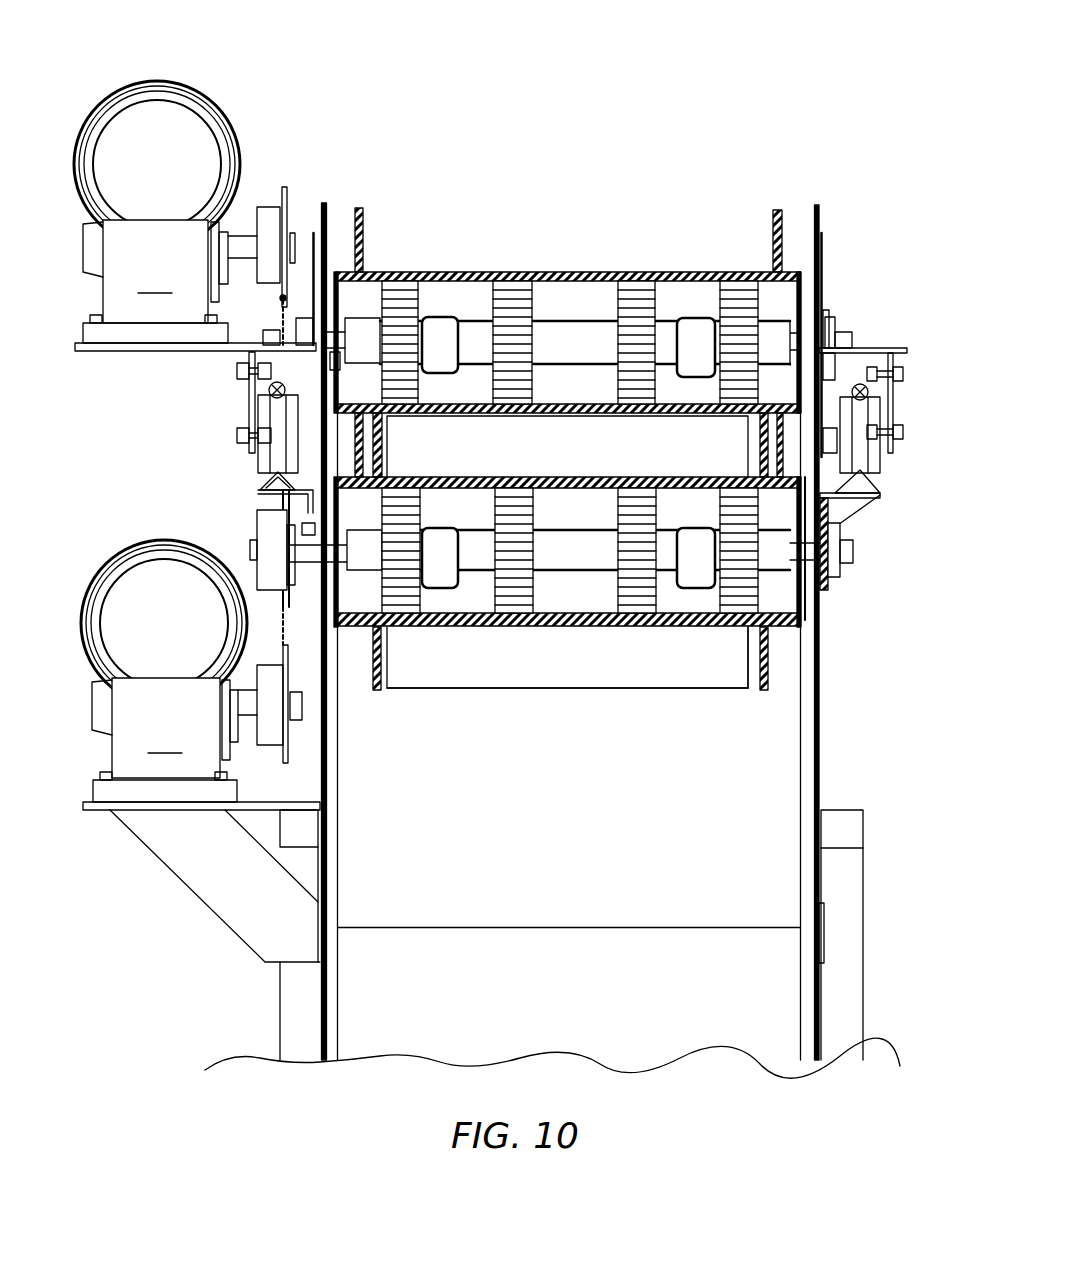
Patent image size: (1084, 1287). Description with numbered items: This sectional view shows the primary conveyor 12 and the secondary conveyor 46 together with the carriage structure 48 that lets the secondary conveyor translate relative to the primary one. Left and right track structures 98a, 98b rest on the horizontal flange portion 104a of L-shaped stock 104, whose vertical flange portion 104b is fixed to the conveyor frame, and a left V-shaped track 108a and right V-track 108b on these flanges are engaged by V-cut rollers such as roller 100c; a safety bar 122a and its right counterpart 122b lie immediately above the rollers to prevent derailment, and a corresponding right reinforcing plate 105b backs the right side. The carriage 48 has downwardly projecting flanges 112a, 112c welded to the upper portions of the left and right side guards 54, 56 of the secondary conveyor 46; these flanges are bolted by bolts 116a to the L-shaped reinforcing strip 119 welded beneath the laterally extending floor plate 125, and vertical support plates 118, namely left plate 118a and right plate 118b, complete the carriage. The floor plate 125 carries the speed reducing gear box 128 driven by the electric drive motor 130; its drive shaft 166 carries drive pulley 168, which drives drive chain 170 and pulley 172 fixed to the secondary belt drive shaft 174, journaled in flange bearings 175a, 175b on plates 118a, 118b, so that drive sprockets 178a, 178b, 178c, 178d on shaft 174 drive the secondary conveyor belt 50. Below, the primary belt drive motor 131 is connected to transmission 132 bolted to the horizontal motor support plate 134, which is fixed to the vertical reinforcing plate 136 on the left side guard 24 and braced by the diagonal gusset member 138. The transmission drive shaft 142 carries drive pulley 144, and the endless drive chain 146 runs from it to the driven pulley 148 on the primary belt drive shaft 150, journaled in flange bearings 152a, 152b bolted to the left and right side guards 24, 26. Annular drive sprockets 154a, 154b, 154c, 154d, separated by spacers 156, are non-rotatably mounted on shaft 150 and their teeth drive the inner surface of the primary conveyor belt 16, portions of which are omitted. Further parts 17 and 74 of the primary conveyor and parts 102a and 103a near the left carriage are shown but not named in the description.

The primary conveyor 12 is at (825, 740).
The primary conveyor belt 16 is at (457, 697).
The cross member 17 is at (298, 828).
The left side guard 24 is at (320, 997).
The right side guard 26 is at (822, 998).
The secondary conveyor 46 is at (876, 231).
The carriage structure 48 is at (331, 155).
The secondary conveyor belt 50 is at (588, 250).
The left side guard 54 is at (330, 205).
The right side guard 56 is at (812, 230).
The lower support plate 74 is at (686, 690).
The left track structure 98a is at (218, 493).
The right track structure 98b is at (866, 548).
The V-cut roller 100c is at (880, 472).
The upper bearing support 102a is at (388, 478).
The bearing block 103a is at (258, 546).
The lower shaft 104 is at (313, 590).
The horizontal flange portion 104a is at (290, 495).
The vertical flange portion 104b is at (660, 689).
The right shaft stub 105b is at (852, 562).
The left V-shaped track 108a is at (260, 490).
The right V-track 108b is at (878, 495).
The downwardly projecting flange 112a is at (258, 415).
The downwardly extending flange 112c is at (882, 415).
The bolts 116a is at (238, 374).
The right support plate 118 is at (812, 615).
The vertical supporting plate 118a is at (313, 245).
The right support plate 118b is at (822, 245).
The L-shaped reinforcing strip 119 is at (248, 355).
The safety bar 122a is at (268, 392).
The adjusting screw 122b is at (862, 382).
The floor plate 125 is at (108, 351).
The speed reducing gear box 128 is at (155, 271).
The electric drive motor 130 is at (160, 80).
The primary belt drive motor 131 is at (137, 545).
The speed-reducing transmission 132 is at (165, 728).
The horizontal motor support plate 134 is at (108, 810).
The vertical reinforcing plate 136 is at (328, 788).
The gusset member 138 is at (190, 890).
The drive shaft 142 is at (248, 720).
The drive pulley 144 is at (289, 745).
The endless drive chain 146 is at (268, 650).
The driven pulley 148 is at (262, 612).
The primary belt drive shaft 150 is at (347, 575).
The flange bearing 152a is at (258, 565).
The flange bearing 152b is at (838, 580).
The annular drive sprocket 154a is at (398, 600).
The annular drive sprocket 154b is at (512, 600).
The annular drive sprocket 154c is at (630, 600).
The annular drive sprocket 154d is at (735, 600).
The spacers 156 is at (470, 533).
The drive shaft 166 is at (240, 246).
The drive pulley 168 is at (284, 195).
The drive chain 170 is at (230, 330).
The pulley 172 is at (262, 220).
The secondary belt drive shaft 174 is at (335, 328).
The left flange bearing 175a is at (281, 303).
The right flange bearing 175b is at (830, 318).
The drive sprocket 178a is at (415, 285).
The drive sprocket 178b is at (525, 285).
The drive sprocket 178c is at (640, 285).
The drive sprocket 178d is at (738, 285).